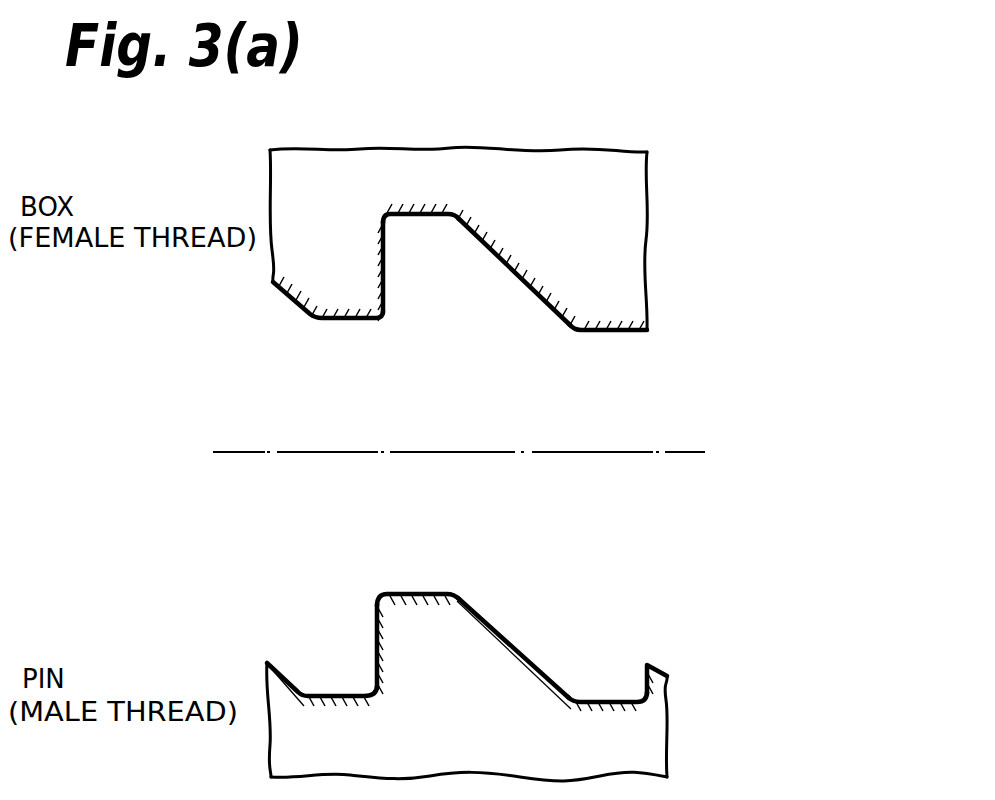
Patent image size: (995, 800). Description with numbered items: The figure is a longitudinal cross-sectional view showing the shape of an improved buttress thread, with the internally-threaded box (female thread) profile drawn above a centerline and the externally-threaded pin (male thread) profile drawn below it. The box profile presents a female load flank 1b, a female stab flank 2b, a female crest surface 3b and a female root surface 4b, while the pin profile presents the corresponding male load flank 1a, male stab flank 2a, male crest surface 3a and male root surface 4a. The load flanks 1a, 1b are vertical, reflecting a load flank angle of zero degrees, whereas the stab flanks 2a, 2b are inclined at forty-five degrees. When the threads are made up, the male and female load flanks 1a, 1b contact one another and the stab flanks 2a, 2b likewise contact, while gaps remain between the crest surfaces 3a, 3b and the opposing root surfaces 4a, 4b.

The female load flank 1b is at (381, 268).
The female stab flank 2b is at (516, 265).
The female crest surface 3b is at (415, 210).
The female root surface 4b is at (603, 326).
The male load flank 1a is at (375, 643).
The male stab flank 2a is at (510, 641).
The male crest surface 3a is at (418, 592).
The male root surface 4a is at (600, 699).